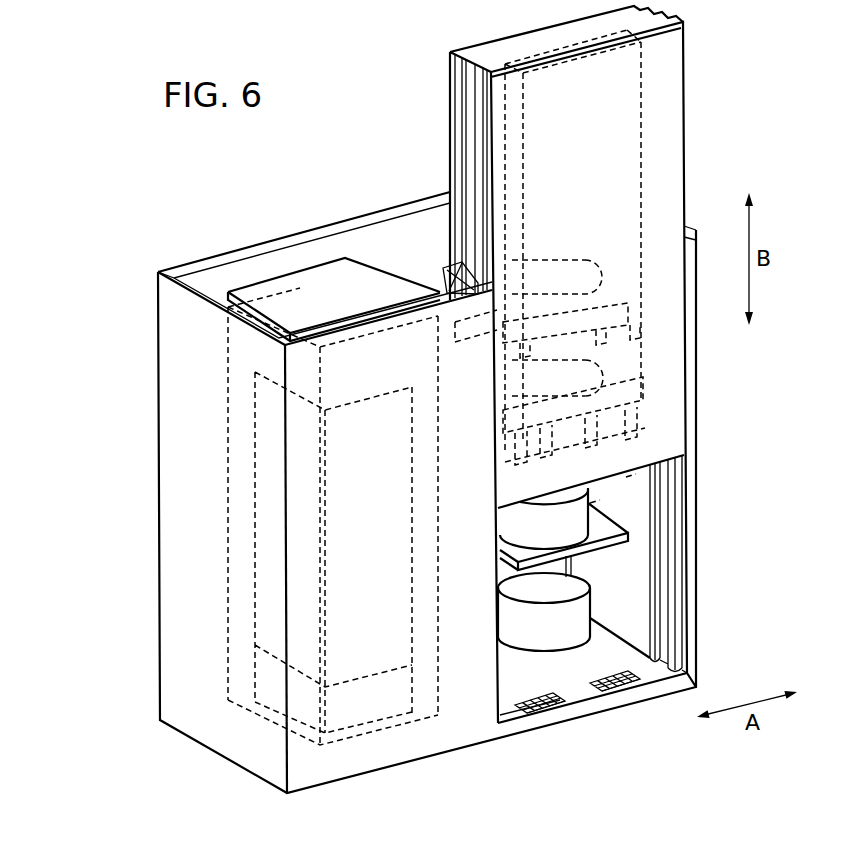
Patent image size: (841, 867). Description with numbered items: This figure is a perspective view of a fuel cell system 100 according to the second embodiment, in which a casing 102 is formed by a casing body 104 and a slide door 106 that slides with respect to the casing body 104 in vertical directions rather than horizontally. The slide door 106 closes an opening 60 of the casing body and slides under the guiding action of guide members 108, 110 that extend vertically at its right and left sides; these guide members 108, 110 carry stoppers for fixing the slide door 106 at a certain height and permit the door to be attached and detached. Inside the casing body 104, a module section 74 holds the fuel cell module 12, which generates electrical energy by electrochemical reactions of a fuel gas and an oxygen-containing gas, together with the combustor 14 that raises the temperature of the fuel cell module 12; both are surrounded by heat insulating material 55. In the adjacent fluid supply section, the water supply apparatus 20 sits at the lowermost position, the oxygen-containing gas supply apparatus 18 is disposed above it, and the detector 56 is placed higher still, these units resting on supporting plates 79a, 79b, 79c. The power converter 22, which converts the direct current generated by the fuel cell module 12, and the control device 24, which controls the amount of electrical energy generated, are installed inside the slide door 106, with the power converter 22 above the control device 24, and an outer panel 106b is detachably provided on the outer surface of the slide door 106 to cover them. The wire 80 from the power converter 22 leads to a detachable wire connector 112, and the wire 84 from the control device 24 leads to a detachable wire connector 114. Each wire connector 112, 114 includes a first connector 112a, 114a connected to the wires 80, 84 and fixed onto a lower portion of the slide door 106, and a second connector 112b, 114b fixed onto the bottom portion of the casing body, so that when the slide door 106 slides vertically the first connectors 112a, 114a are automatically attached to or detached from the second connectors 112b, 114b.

The fuel cell system 100 is at (226, 217).
The casing 102 is at (148, 353).
The casing body 104 is at (393, 207).
The slide door 106 is at (684, 92).
The outer panel 106b is at (668, 47).
The guide member 108 is at (673, 616).
The guide member 110 is at (443, 283).
The wire connector 112 is at (515, 712).
The first connector 112a is at (590, 503).
The second connector 112b is at (545, 708).
The wire connector 114 is at (637, 682).
The first connector 114a is at (626, 477).
The second connector 114b is at (616, 688).
The fuel cell module 12 is at (256, 485).
The combustor 14 is at (374, 714).
The oxygen-containing gas supply apparatus 18 is at (497, 415).
The water supply apparatus 20 is at (510, 527).
The power converter 22 is at (624, 118).
The control device 24 is at (628, 364).
The heat insulating material 55 is at (367, 290).
The detector 56 is at (545, 272).
The opening 60 is at (553, 663).
The module section 74 is at (292, 265).
The supporting plate 79a is at (500, 545).
The supporting plate 79b is at (497, 450).
The supporting plate 79c is at (600, 300).
The wire 80 is at (497, 365).
The wire 84 is at (665, 423).